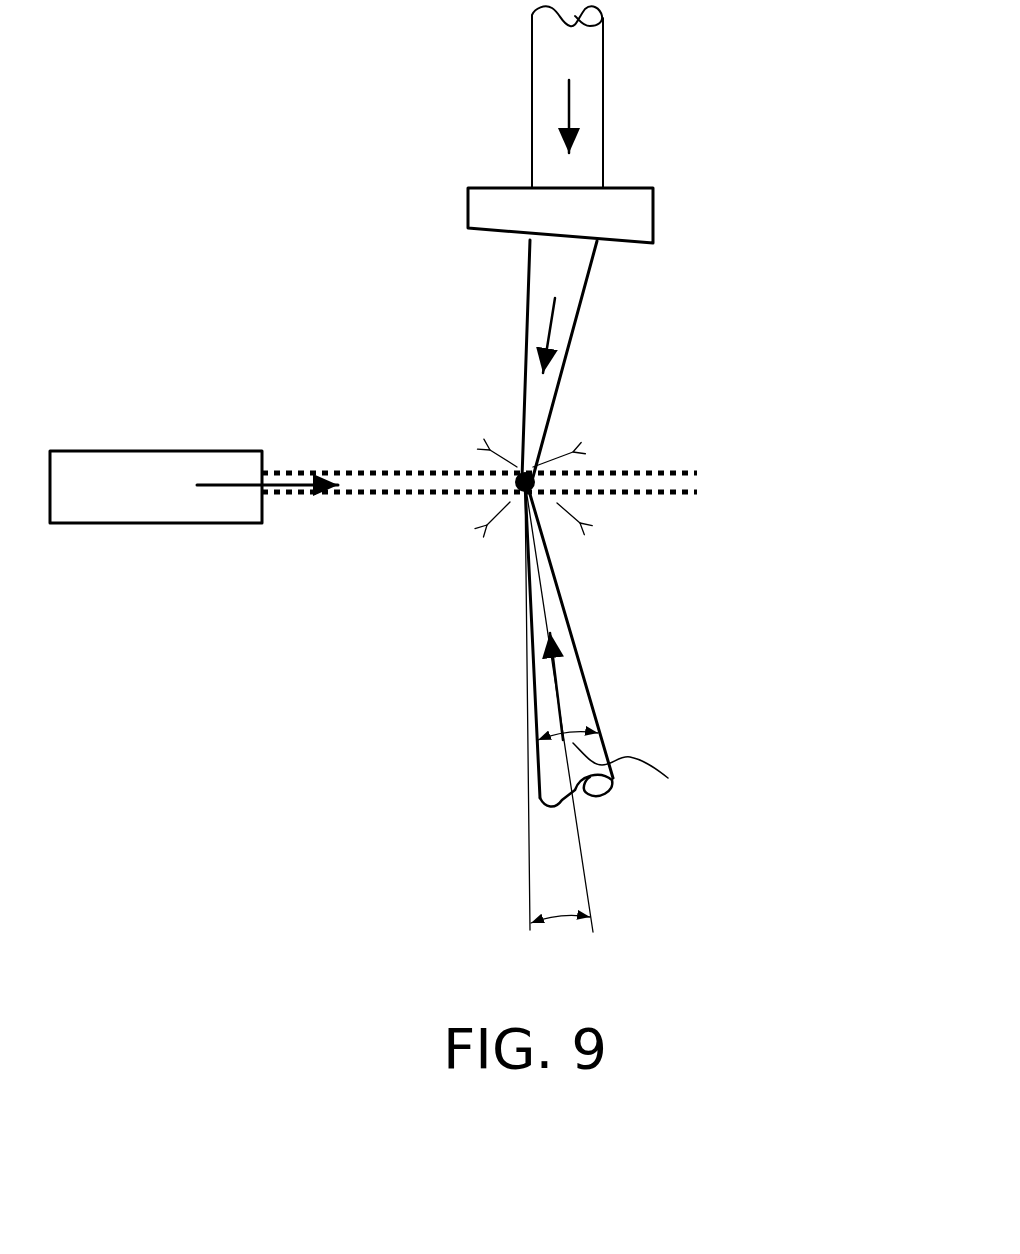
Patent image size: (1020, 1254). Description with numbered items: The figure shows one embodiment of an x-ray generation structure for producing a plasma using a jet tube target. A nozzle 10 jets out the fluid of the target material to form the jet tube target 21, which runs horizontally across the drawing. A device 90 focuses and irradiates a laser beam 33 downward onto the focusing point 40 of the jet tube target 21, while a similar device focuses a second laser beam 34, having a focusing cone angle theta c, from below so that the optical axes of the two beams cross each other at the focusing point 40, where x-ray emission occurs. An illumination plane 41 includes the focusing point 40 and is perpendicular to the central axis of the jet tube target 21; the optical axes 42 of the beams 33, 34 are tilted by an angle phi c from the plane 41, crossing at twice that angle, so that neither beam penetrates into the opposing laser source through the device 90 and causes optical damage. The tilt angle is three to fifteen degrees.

The nozzle 10 is at (185, 451).
The jet tube target 21 is at (367, 487).
The laser beam 33 is at (573, 330).
The laser beam 34 is at (568, 622).
The focusing point 40 is at (543, 437).
The illumination plane 41 is at (527, 853).
The optical axes 42 is at (580, 827).
The device for focusing and irradiating a laser beam 90 is at (653, 187).